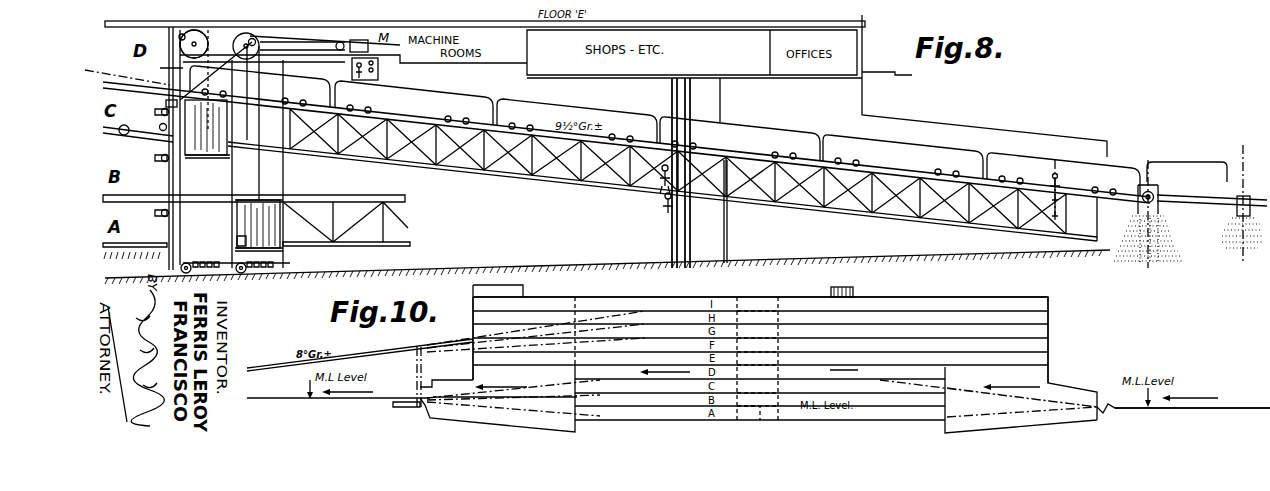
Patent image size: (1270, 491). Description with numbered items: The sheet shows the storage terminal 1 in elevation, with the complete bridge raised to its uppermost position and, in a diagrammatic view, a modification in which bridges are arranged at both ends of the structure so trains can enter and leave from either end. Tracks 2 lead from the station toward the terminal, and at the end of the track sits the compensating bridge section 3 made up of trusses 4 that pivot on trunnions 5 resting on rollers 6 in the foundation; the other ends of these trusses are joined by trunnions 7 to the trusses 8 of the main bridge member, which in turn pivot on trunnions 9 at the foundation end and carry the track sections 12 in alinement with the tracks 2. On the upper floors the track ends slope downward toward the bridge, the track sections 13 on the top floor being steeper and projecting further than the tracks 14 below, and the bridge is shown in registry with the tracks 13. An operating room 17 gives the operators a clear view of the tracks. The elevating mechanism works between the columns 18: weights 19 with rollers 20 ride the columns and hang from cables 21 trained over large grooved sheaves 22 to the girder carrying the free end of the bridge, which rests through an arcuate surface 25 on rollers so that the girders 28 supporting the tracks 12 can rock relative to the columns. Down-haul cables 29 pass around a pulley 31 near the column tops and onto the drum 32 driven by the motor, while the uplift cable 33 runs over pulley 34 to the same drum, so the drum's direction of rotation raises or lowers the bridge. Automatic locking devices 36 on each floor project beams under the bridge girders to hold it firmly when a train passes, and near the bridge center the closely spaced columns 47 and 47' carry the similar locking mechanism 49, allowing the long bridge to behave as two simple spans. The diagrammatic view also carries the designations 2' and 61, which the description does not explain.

In FIG. 10, the storage terminal 1 is at (906, 320).
In FIG. 8, the tracks 2 is at (1250, 197).
In FIG. 10, the tracks 2 is at (1192, 392).
In FIG. 10, the main line level track (left) 2' is at (338, 389).
In FIG. 8, the compensating bridge section 3 is at (1188, 218).
In FIG. 8, the trusses 4 is at (1098, 165).
In FIG. 8, the trunnions 5 is at (1242, 196).
In FIG. 8, the rollers 6 is at (1236, 208).
In FIG. 8, the trunnions 7 is at (1048, 186).
In FIG. 8, the trusses of the main bridge member 8 is at (360, 198).
In FIG. 8, the trunnions 9 is at (1153, 192).
In FIG. 8, the track sections 12 is at (903, 163).
In FIG. 8, the track sections 13 is at (126, 82).
In FIG. 8, the tracks 14 is at (118, 137).
In FIG. 8, the operating room 17 is at (380, 68).
In FIG. 8, the columns 18 is at (727, 247).
In FIG. 8, the weights 19 is at (274, 200).
In FIG. 8, the rollers 20 is at (284, 248).
In FIG. 8, the cables 21 is at (209, 97).
In FIG. 8, the sheaves 22 is at (204, 33).
In FIG. 8, the arcuate surface 25 is at (159, 127).
In FIG. 8, the girders 28 is at (166, 104).
In FIG. 8, the down-haul cables 29 is at (237, 240).
In FIG. 8, the pulley 31 is at (254, 38).
In FIG. 8, the drum 32 is at (343, 42).
In FIG. 8, the cable 33 is at (160, 70).
In FIG. 8, the pulley 34 is at (182, 34).
In FIG. 8, the automatic locking devices 36 is at (158, 213).
In FIG. 8, the columns 47 is at (655, 173).
In FIG. 8, the columns 47' is at (700, 173).
In FIG. 8, the automatic locking mechanism 49 is at (659, 186).
In FIG. 10, the car 61 is at (754, 413).